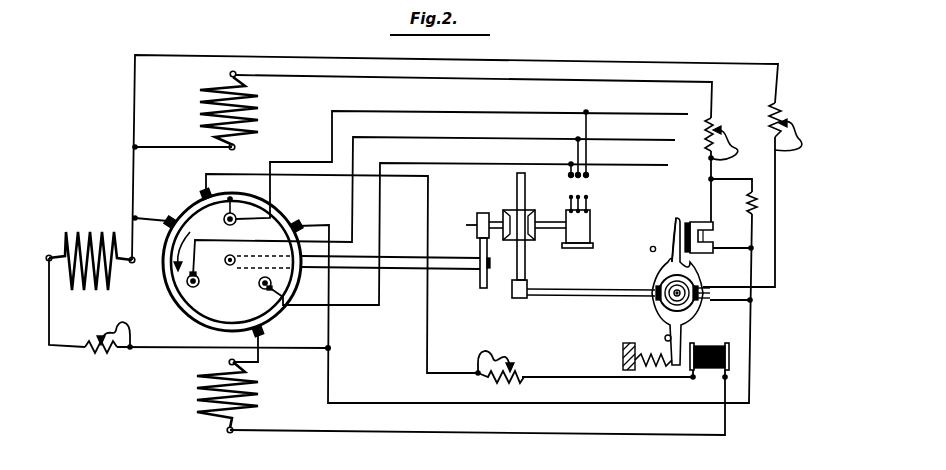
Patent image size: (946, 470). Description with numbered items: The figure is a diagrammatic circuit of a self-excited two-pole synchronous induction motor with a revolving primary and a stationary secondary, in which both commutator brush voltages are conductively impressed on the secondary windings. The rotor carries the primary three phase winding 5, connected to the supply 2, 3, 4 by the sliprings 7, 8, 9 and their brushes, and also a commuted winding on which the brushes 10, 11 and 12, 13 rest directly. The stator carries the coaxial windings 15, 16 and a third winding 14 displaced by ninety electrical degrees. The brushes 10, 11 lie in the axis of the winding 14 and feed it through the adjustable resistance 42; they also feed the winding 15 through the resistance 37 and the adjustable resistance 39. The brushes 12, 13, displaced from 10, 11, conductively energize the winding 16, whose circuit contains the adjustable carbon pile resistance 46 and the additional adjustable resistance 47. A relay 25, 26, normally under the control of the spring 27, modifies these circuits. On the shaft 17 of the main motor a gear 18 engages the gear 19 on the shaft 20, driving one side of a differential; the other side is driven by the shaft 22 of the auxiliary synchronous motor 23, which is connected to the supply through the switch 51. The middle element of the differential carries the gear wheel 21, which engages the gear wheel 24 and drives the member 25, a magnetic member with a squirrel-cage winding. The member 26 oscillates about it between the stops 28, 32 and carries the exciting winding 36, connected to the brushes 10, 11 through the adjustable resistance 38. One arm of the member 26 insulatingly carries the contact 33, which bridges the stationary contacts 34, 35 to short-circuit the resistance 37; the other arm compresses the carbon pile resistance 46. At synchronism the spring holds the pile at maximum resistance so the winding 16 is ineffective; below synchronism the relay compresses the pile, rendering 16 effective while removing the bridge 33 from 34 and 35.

The supply 2 is at (612, 137).
The supply 3 is at (619, 151).
The supply 4 is at (608, 163).
The primary three phase winding 5 is at (172, 309).
The slipring 7 is at (220, 215).
The slipring 8 is at (196, 288).
The slipring 9 is at (256, 290).
The brush 10 is at (308, 217).
The brush 11 is at (163, 211).
The brush 12 is at (195, 186).
The brush 13 is at (270, 333).
The secondary winding 14 is at (90, 244).
The secondary winding 15 is at (245, 110).
The secondary winding 16 is at (246, 396).
The shaft 17 is at (413, 268).
The gear 18 is at (479, 284).
The gear 19 is at (476, 214).
The shaft 20 is at (470, 226).
The gear wheel 21 is at (516, 200).
The shaft 22 is at (552, 220).
The auxiliary synchronous motor 23 is at (592, 222).
The gear wheel 24 is at (520, 298).
The relay member 25 is at (656, 300).
The relay member 26 is at (650, 281).
The spring 27 is at (654, 368).
The stop 28 is at (663, 337).
The stop 32 is at (649, 249).
The contact 33 is at (686, 220).
The stationary contact 34 is at (714, 237).
The stationary contact 35 is at (715, 252).
The exciting winding 36 is at (706, 297).
The resistance 37 is at (739, 200).
The adjustable resistance 38 is at (775, 127).
The adjustable resistance 39 is at (724, 135).
The adjustable resistance 42 is at (107, 352).
The adjustable carbon pile resistance 46 is at (709, 372).
The adjustable resistance 47 is at (509, 365).
The switch 51 is at (580, 198).